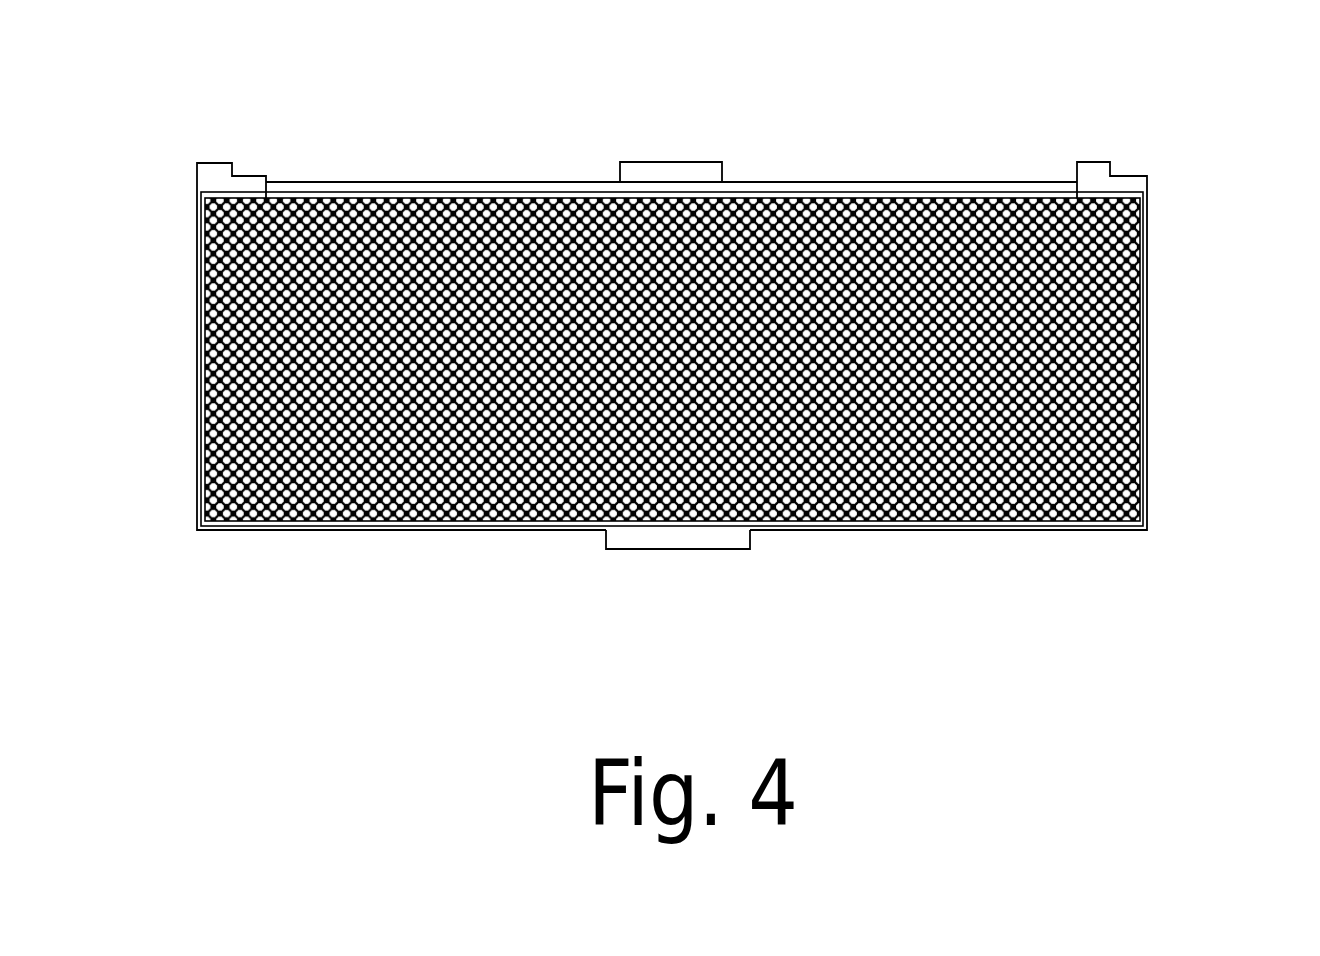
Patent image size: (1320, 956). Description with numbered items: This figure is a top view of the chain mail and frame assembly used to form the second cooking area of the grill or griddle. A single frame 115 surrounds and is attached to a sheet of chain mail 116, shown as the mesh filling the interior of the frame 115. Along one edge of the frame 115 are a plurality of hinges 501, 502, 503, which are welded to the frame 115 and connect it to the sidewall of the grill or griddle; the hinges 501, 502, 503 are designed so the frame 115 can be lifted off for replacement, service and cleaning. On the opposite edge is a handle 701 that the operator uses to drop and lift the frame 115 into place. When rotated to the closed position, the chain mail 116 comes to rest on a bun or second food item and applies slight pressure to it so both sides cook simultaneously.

The hinge 501 is at (192, 135).
The hinge 502 is at (1126, 138).
The hinge 503 is at (665, 137).
The handle 701 is at (616, 578).
The frame 115 is at (1160, 374).
The chain mail 116 is at (1100, 519).